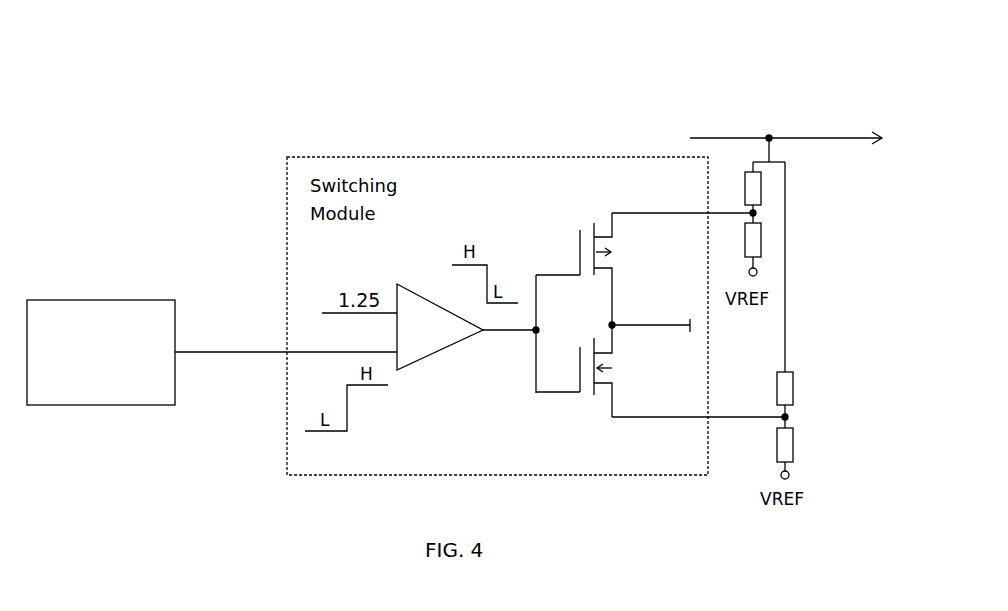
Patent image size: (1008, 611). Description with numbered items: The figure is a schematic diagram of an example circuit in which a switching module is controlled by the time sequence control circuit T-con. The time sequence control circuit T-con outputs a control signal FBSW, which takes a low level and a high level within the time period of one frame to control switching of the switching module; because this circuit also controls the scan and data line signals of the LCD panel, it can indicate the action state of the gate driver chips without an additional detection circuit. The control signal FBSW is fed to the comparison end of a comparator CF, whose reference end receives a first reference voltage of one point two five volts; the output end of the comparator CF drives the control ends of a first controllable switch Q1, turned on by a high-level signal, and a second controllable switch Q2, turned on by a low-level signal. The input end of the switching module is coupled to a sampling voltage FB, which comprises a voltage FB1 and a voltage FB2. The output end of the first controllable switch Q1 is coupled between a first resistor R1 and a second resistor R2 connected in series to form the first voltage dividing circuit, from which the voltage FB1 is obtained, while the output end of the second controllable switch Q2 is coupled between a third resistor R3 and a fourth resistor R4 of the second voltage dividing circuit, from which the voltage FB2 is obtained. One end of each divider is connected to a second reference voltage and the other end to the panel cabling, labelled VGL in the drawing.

The time sequence control circuit T-con is at (101, 352).
The control signal FBSW is at (286, 341).
The comparator CF is at (440, 332).
The first controllable switch Q1 is at (574, 264).
The second controllable switch Q2 is at (574, 375).
The sampling voltage FB is at (649, 317).
The voltage FB1 is at (684, 203).
The voltage FB2 is at (700, 408).
The gate low voltage output VGL is at (786, 136).
The first resistor R1 is at (740, 187).
The second resistor R2 is at (740, 244).
The third resistor R3 is at (799, 289).
The fourth resistor R4 is at (799, 448).